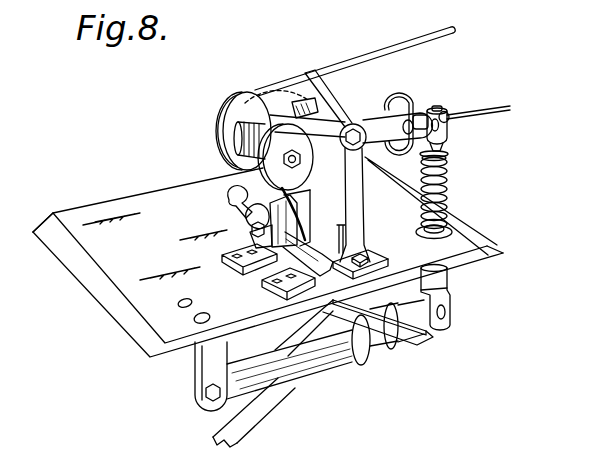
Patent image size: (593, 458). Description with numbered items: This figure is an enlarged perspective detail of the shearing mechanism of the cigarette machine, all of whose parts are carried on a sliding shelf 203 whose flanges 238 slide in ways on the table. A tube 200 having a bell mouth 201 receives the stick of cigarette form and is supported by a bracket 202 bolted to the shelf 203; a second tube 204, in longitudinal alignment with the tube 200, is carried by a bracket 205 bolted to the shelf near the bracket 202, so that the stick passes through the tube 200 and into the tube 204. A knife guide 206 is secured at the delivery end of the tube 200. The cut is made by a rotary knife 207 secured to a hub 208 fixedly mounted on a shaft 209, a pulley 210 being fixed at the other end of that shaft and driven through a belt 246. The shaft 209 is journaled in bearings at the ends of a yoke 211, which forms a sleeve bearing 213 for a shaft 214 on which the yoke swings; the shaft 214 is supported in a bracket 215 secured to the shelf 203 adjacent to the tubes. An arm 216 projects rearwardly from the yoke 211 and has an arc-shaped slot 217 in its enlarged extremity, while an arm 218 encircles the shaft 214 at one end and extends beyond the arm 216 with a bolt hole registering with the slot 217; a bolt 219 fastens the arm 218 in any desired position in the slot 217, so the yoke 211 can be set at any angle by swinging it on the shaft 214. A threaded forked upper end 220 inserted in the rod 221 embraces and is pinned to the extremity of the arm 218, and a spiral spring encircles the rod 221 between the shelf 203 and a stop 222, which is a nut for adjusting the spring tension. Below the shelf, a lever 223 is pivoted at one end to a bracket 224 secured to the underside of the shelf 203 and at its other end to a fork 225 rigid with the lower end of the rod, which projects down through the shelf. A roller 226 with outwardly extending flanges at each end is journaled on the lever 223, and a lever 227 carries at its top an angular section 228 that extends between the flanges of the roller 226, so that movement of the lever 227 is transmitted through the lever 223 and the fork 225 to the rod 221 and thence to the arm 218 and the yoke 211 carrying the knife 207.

The tube 200 is at (246, 214).
The bell mouth 201 is at (229, 199).
The bracket 202 is at (252, 234).
The sliding shelf 203 is at (120, 263).
The tube 204 is at (367, 246).
The bracket 205 is at (270, 292).
The knife guide 206 is at (283, 220).
The rotary knife 207 is at (318, 197).
The hub 208 is at (283, 163).
The shaft 209 is at (306, 172).
The pulley 210 is at (230, 131).
The yoke 211 is at (318, 108).
The sleeve bearing 213 is at (328, 115).
The shaft 214 is at (355, 129).
The bracket 215 is at (310, 110).
The arm 216 is at (385, 104).
The arc-shaped slot 217 is at (416, 115).
The arm 218 is at (434, 113).
The bolt 219 is at (432, 109).
The forked upper end 220 is at (453, 113).
The rod 221 is at (448, 185).
The stop 222 is at (450, 210).
The lever 223 is at (327, 363).
The bracket 224 is at (210, 358).
The fork 225 is at (452, 305).
The roller 226 is at (377, 350).
The lever 227 is at (244, 423).
The angular section 228 is at (430, 342).
The flanges 238 is at (130, 330).
The belt 246 is at (363, 47).